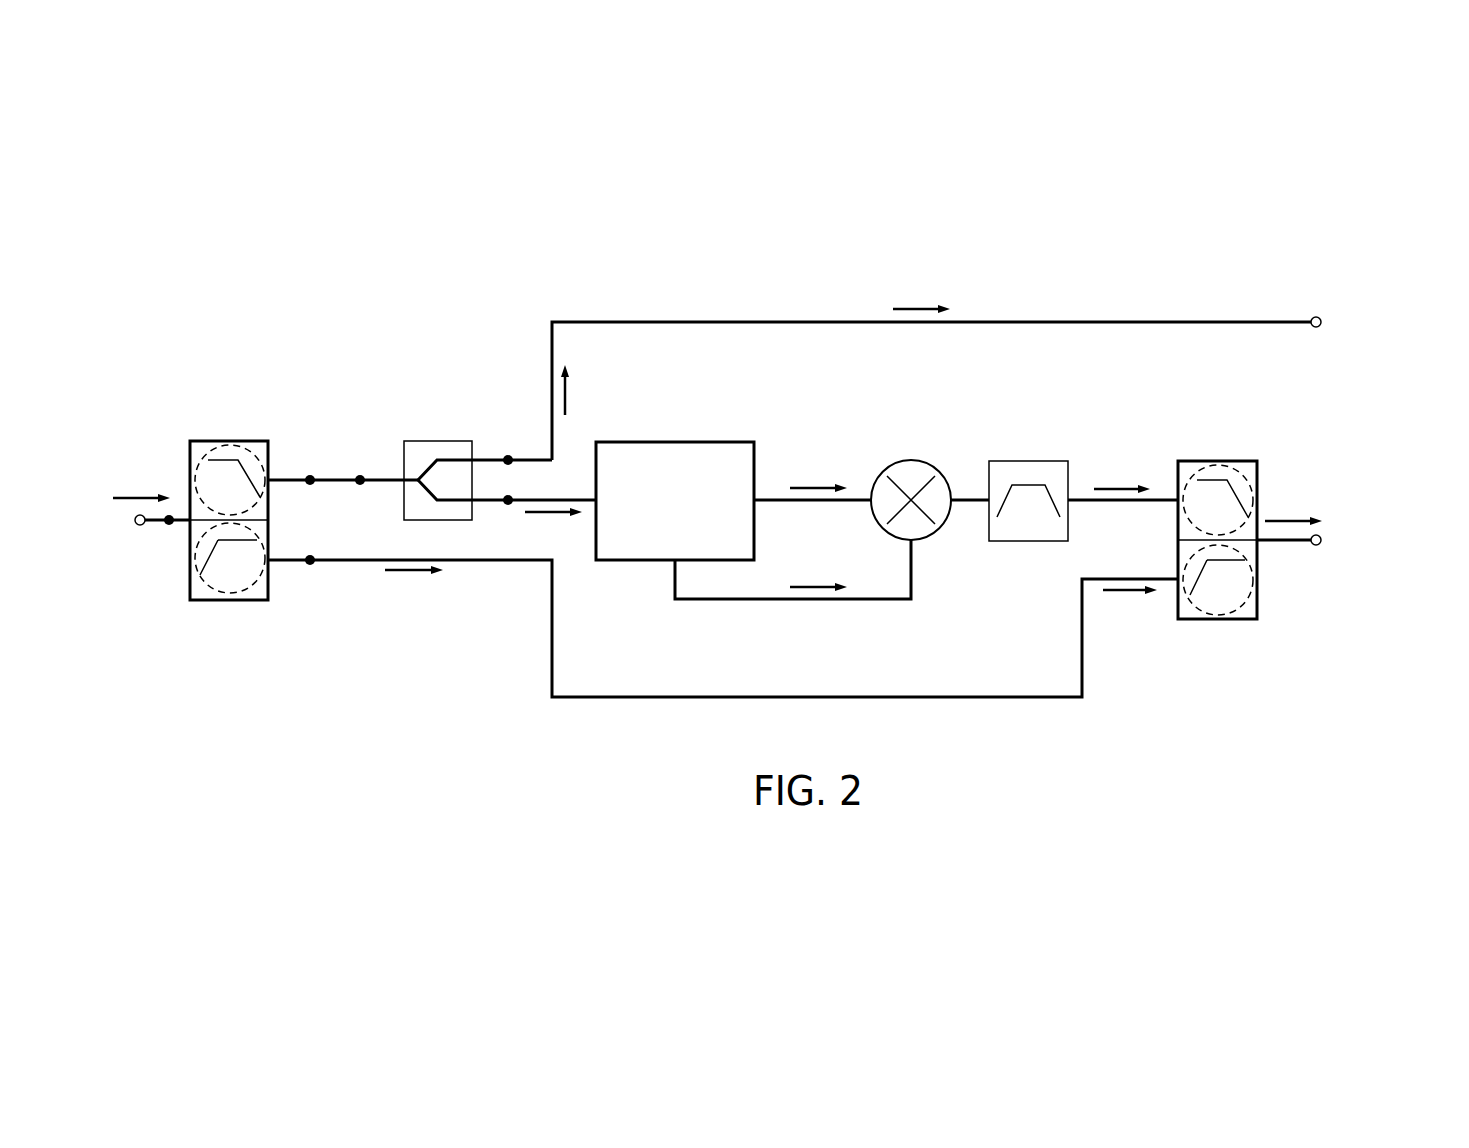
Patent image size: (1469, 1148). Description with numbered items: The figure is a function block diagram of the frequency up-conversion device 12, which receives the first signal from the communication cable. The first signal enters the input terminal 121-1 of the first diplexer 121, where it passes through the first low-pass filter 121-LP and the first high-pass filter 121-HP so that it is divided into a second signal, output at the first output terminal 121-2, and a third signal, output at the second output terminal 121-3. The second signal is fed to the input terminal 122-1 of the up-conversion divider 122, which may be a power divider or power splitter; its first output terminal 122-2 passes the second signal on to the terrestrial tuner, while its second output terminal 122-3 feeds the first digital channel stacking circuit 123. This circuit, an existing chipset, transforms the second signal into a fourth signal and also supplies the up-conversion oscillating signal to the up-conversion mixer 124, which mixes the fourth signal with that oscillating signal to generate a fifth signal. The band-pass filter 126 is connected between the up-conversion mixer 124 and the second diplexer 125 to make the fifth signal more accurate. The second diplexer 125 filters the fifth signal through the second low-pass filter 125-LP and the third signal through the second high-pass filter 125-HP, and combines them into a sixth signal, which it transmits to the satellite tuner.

The frequency up-conversion device 12 is at (1090, 262).
The first diplexer 121 is at (190, 455).
The input terminal 121-1 is at (169, 524).
The first output terminal 121-2 is at (310, 478).
The second output terminal 121-3 is at (310, 562).
The first low-pass filter 121-LP is at (204, 452).
The first high-pass filter 121-HP is at (240, 600).
The up-conversion divider 122 is at (440, 441).
The input terminal 122-1 is at (360, 478).
The first output terminal 122-2 is at (508, 458).
The second output terminal 122-3 is at (508, 502).
The first digital channel stacking circuit 123 is at (675, 440).
The up-conversion mixer 124 is at (905, 460).
The second diplexer 125 is at (1257, 595).
The second low-pass filter 125-LP is at (1228, 470).
The second high-pass filter 125-HP is at (1230, 619).
The band-pass filter 126 is at (1030, 461).